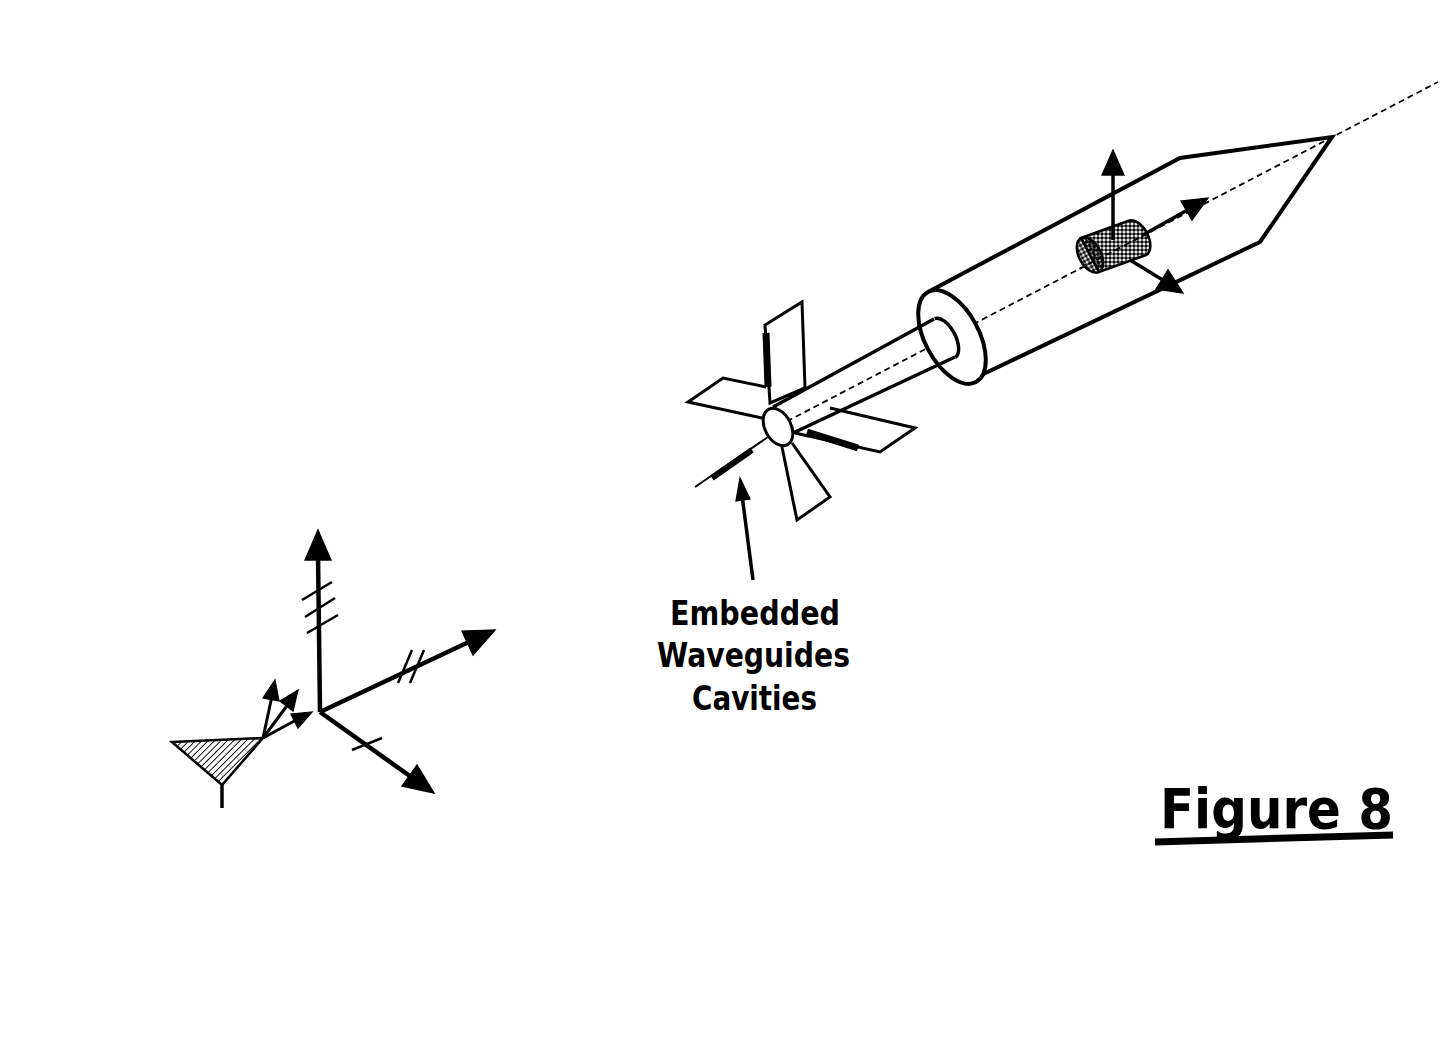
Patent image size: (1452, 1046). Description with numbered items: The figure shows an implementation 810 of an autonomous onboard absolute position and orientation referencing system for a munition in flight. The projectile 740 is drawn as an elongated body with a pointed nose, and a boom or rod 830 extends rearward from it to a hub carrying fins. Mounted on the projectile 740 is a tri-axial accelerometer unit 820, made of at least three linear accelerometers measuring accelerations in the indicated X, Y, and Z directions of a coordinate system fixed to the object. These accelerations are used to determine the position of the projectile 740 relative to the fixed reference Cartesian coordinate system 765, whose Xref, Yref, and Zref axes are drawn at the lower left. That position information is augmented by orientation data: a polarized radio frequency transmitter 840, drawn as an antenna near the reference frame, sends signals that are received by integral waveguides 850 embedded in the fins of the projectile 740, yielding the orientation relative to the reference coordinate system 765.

The implementation 810 is at (237, 112).
The projectile 740 is at (1305, 219).
The tri-axial accelerometer unit 820 is at (1080, 208).
The boom rod 830 is at (874, 315).
The integral waveguides 850 is at (739, 353).
The polarized radio frequency transmitter 840 is at (176, 699).
The reference Cartesian coordinate system 765 is at (372, 800).